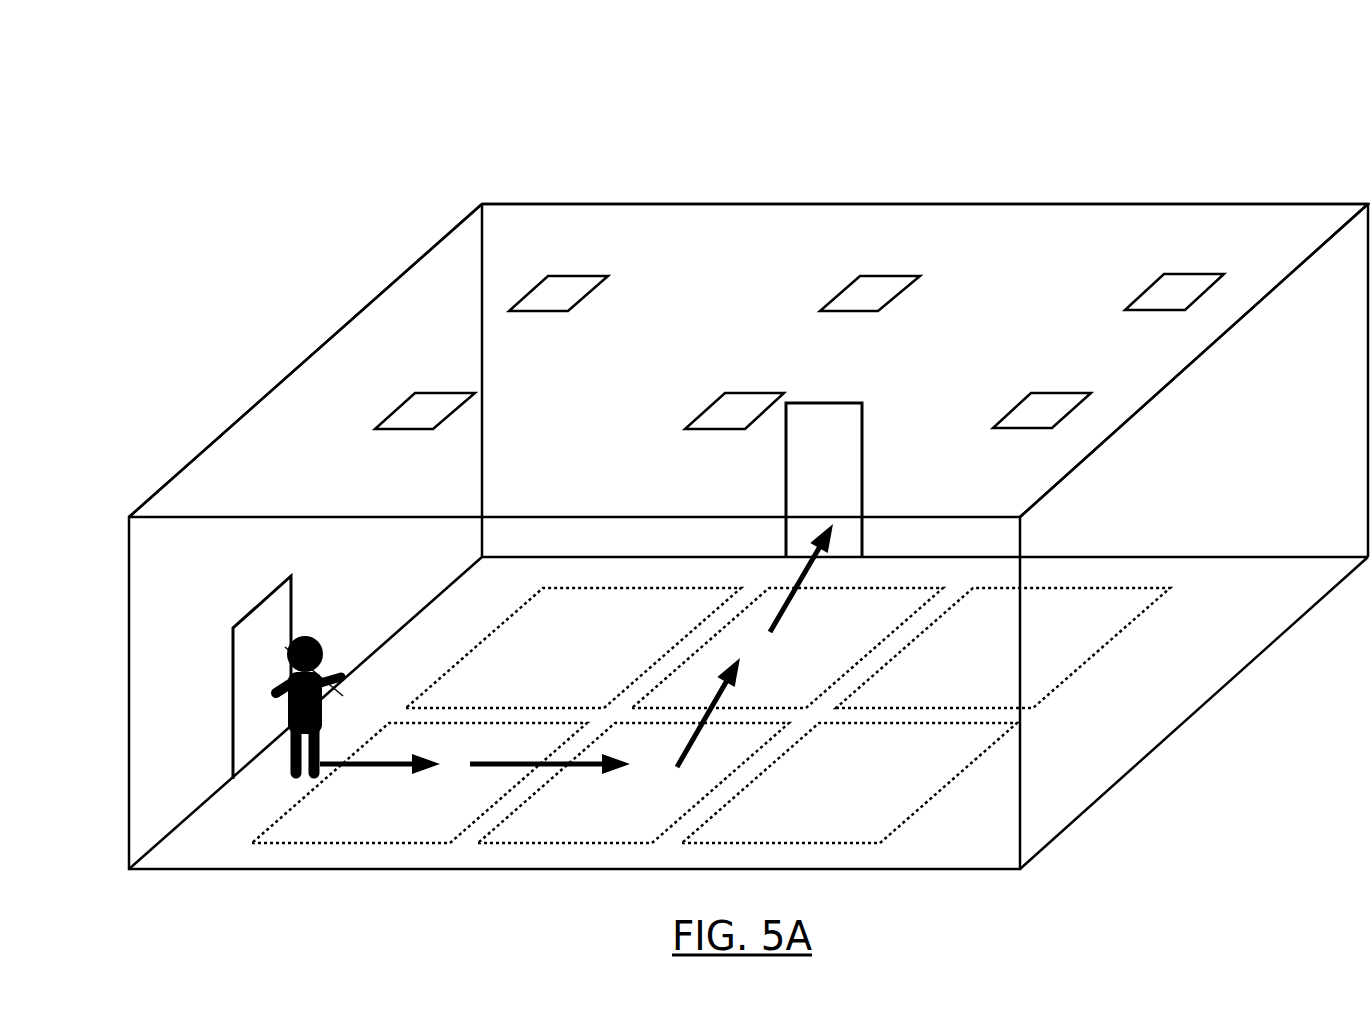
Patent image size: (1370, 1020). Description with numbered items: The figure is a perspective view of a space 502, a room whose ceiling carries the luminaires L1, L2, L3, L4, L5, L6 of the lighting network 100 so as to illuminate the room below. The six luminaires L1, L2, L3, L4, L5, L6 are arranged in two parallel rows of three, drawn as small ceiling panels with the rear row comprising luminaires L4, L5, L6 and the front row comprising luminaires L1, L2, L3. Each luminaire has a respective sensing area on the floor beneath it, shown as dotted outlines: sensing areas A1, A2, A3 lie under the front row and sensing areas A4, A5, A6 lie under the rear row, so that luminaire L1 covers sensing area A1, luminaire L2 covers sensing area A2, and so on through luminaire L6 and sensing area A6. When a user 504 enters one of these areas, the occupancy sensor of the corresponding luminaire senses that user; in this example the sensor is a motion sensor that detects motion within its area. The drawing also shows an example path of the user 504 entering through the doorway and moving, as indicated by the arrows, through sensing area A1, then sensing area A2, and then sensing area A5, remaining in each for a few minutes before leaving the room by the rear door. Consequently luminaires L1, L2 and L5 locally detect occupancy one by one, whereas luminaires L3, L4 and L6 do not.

The lighting network 100 is at (387, 162).
The space 502 is at (1317, 204).
The user 504 is at (308, 640).
The luminaire L1 is at (415, 393).
The luminaire L2 is at (725, 393).
The luminaire L3 is at (1031, 393).
The luminaire L4 is at (548, 276).
The luminaire L5 is at (860, 276).
The luminaire L6 is at (1164, 274).
The sensing area A1 is at (423, 807).
The sensing area A2 is at (616, 807).
The sensing area A3 is at (843, 809).
The sensing area A4 is at (588, 667).
The sensing area A5 is at (779, 667).
The sensing area A6 is at (1008, 667).